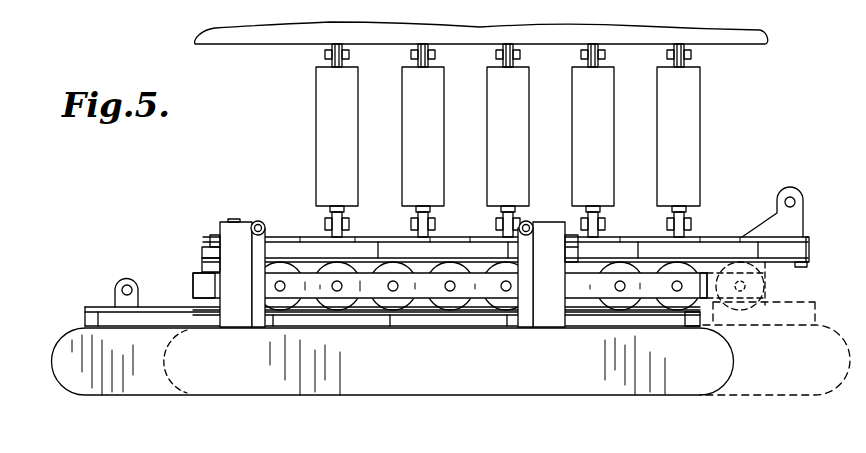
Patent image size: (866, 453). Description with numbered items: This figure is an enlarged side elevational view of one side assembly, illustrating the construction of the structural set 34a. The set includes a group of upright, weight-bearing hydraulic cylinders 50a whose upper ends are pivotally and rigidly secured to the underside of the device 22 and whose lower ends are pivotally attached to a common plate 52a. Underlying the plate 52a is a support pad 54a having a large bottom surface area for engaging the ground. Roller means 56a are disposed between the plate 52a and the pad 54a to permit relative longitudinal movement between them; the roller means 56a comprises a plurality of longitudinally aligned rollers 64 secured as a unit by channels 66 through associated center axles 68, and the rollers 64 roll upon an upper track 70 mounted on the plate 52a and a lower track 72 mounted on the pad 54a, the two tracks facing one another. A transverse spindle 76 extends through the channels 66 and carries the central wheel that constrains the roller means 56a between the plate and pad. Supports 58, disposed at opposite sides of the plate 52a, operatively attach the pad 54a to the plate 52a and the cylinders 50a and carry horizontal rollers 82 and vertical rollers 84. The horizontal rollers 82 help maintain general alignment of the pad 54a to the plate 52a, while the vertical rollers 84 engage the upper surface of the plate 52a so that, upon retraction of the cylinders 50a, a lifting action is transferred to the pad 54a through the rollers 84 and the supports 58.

The device 22 is at (770, 42).
The structural set 34a is at (290, 158).
The upright weight-bearing hydraulic cylinders 50a is at (692, 128).
The common plate 52a is at (717, 236).
The support pad 54a is at (456, 378).
The roller means 56a is at (190, 261).
The supports 58 is at (232, 312).
The rollers 64 is at (625, 306).
The channels 66 is at (478, 290).
The center axles 68 is at (673, 284).
The upper track 70 is at (803, 270).
The lower track 72 is at (152, 304).
The transverse spindle 76 is at (446, 285).
The horizontal rollers 82 is at (208, 232).
The vertical rollers 84 is at (259, 221).